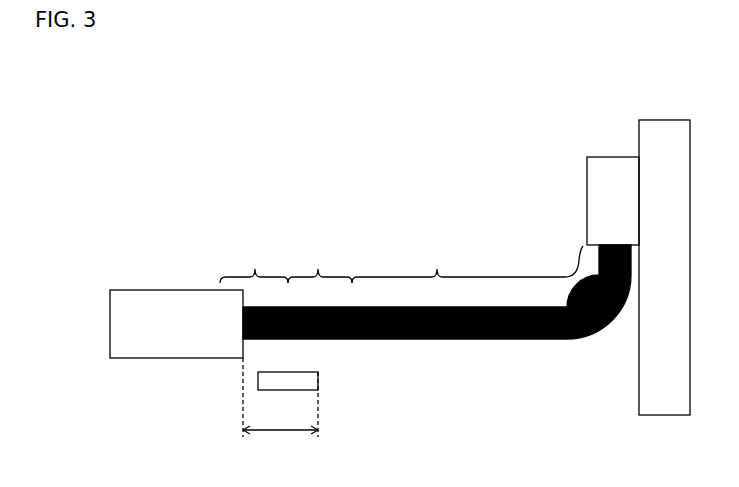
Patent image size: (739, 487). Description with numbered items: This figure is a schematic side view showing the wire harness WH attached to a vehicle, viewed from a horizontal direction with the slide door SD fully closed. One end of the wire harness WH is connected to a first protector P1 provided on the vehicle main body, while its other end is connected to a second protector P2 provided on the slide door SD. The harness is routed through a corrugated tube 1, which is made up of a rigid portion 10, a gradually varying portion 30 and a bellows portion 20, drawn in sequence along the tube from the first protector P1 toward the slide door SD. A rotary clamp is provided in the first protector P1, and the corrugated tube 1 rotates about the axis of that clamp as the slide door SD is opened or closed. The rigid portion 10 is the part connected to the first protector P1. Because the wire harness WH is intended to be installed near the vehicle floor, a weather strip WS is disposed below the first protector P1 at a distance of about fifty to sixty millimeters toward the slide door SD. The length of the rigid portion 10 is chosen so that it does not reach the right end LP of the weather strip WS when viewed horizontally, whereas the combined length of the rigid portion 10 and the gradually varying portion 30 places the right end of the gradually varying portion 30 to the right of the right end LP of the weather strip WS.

The wire harness WH is at (324, 157).
The corrugated tube 1 is at (507, 340).
The rigid portion 10 is at (254, 264).
The gradually varying portion 30 is at (320, 264).
The bellows portion 20 is at (467, 264).
The first protector P1 is at (168, 289).
The second protector P2 is at (608, 163).
The slide door SD is at (638, 382).
The weather strip WS is at (316, 380).
The right end of the weather strip LP is at (318, 389).